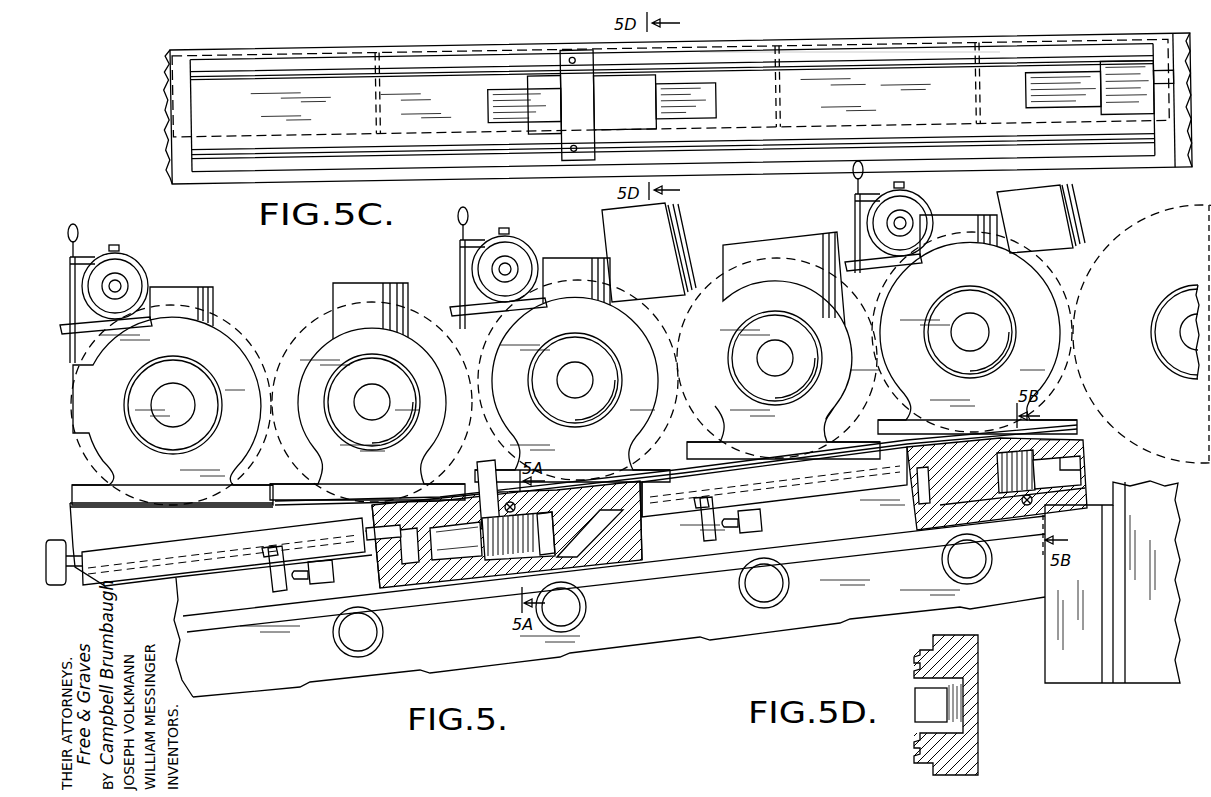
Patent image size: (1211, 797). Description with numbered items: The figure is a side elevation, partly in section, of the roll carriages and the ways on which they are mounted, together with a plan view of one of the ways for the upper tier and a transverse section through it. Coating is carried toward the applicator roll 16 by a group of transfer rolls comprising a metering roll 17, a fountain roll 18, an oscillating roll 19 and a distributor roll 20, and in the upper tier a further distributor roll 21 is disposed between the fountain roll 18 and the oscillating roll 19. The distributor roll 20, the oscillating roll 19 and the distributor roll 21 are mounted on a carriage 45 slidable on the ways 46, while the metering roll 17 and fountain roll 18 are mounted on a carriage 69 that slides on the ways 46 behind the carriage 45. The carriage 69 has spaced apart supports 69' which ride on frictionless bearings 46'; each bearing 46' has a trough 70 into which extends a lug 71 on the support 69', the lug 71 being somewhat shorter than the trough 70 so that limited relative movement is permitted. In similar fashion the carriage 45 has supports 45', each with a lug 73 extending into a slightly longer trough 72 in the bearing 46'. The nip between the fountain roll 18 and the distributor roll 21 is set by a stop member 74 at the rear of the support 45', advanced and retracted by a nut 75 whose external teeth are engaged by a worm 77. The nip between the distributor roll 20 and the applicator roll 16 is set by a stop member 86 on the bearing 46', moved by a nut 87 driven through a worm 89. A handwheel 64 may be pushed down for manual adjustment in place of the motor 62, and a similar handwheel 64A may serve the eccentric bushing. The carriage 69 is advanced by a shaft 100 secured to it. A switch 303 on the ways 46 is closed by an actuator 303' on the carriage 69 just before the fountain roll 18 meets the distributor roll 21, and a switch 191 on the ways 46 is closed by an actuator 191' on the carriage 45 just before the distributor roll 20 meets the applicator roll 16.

In FIG. 5, the applicator roll 16 is at (1130, 232).
In FIG. 5, the metering roll 17 is at (230, 335).
In FIG. 5, the fountain roll 18 is at (306, 333).
In FIG. 5, the oscillating roll 19 is at (710, 282).
In FIG. 5, the distributor roll 20 is at (958, 245).
In FIG. 5, the distributor roll 21 is at (561, 290).
In FIG. 5, the carriage 45 is at (774, 489).
In FIG. 5, the carriage support 45' is at (775, 503).
In FIG. 5, the ways 46 is at (616, 595).
In FIG. 5C, the frictionless bearing 46' is at (850, 81).
In FIG. 5, the frictionless bearing 46' is at (359, 546).
In FIG. 5D, the frictionless bearing 46' is at (925, 705).
In FIG. 5, the motor 62 is at (511, 247).
In FIG. 5, the handwheel 64 is at (466, 277).
In FIG. 5, the handwheel 64A is at (678, 230).
In FIG. 5, the carriage 69 is at (241, 560).
In FIG. 5, the carriage support 69' is at (504, 523).
In FIG. 5C, the trough 70 is at (684, 128).
In FIG. 5, the trough 70 is at (600, 527).
In FIG. 5, the lug 71 is at (460, 545).
In FIG. 5, the trough 72 is at (965, 505).
In FIG. 5, the lug 73 is at (948, 486).
In FIG. 5, the stop member 74 is at (486, 520).
In FIG. 5, the nut 75 is at (518, 558).
In FIG. 5, the worm 77 is at (507, 490).
In FIG. 5, the stop member 86 is at (1000, 480).
In FIG. 5, the nut 87 is at (1030, 496).
In FIG. 5, the worm 89 is at (1025, 506).
In FIG. 5, the shaft 100 is at (84, 556).
In FIG. 5, the switch 191 is at (731, 551).
In FIG. 5, the actuator 191' is at (683, 519).
In FIG. 5, the switch 303 is at (313, 602).
In FIG. 5, the actuator 303' is at (279, 596).